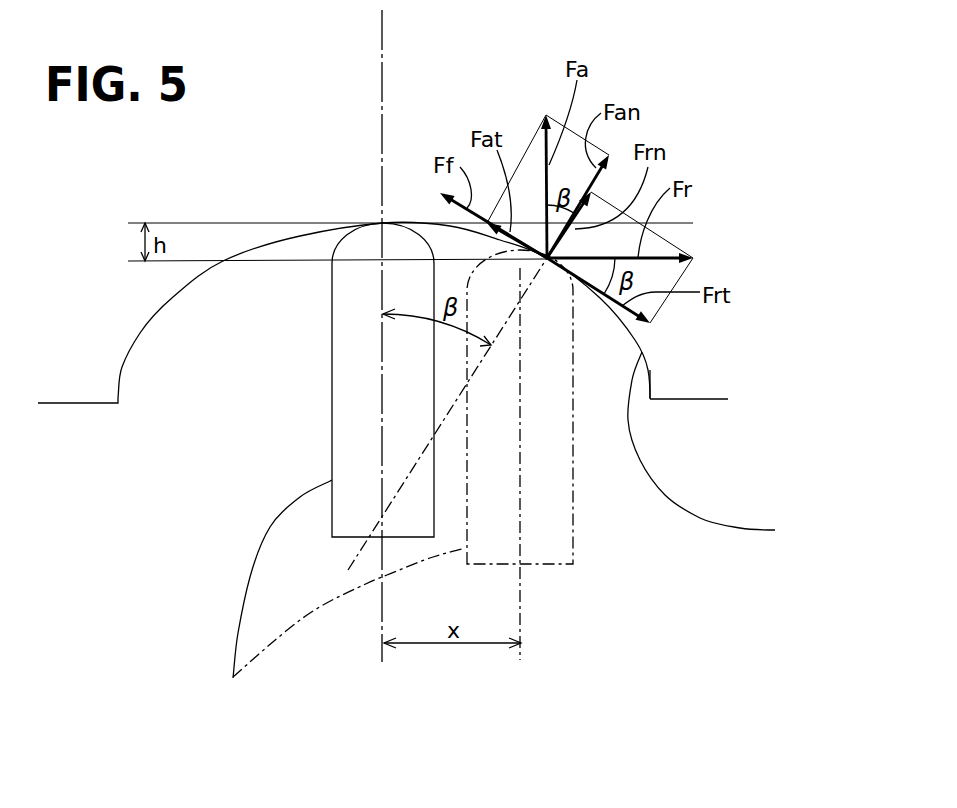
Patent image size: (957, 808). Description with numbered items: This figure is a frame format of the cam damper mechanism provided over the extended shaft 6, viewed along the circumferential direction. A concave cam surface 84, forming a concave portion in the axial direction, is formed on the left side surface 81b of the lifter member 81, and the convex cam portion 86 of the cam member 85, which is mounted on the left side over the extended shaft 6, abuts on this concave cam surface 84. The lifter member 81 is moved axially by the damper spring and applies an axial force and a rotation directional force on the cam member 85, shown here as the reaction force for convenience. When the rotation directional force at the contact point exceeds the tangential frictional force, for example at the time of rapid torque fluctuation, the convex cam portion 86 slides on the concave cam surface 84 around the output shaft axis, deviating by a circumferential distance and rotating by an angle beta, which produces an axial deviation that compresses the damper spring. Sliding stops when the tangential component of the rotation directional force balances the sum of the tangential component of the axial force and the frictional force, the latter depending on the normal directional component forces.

The extended shaft 6 is at (382, 53).
The lifter member 81 is at (687, 378).
The left side surface of the lifter member 81b is at (688, 399).
The concave cam surface 84 is at (719, 449).
The cam member 85 is at (336, 646).
The convex cam portion 86 is at (274, 597).